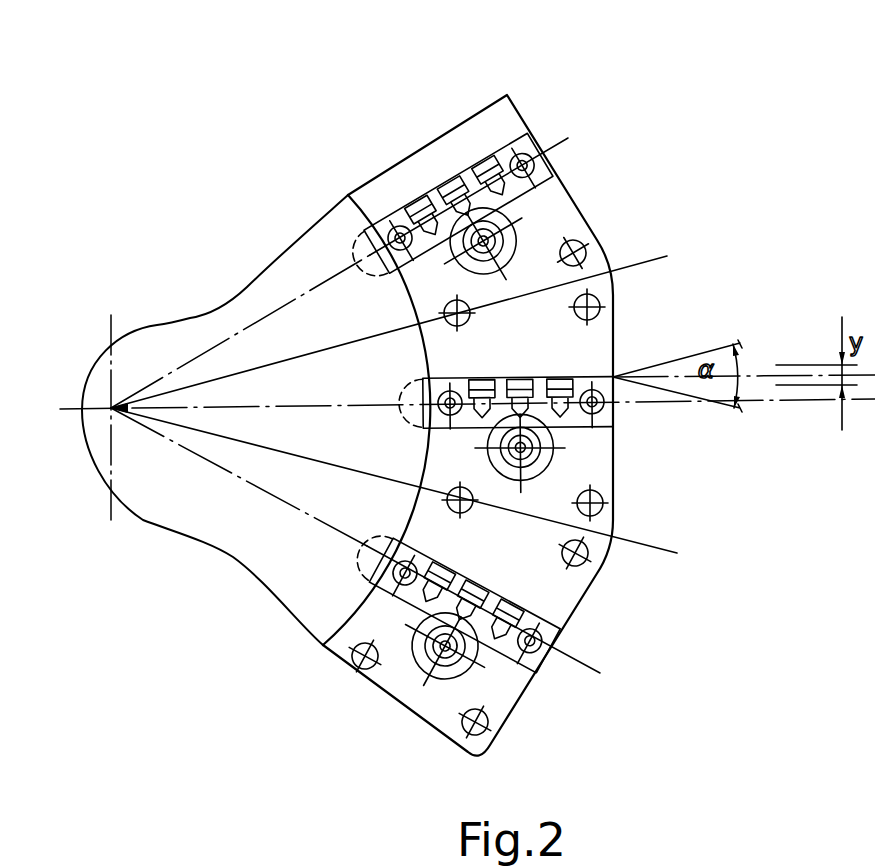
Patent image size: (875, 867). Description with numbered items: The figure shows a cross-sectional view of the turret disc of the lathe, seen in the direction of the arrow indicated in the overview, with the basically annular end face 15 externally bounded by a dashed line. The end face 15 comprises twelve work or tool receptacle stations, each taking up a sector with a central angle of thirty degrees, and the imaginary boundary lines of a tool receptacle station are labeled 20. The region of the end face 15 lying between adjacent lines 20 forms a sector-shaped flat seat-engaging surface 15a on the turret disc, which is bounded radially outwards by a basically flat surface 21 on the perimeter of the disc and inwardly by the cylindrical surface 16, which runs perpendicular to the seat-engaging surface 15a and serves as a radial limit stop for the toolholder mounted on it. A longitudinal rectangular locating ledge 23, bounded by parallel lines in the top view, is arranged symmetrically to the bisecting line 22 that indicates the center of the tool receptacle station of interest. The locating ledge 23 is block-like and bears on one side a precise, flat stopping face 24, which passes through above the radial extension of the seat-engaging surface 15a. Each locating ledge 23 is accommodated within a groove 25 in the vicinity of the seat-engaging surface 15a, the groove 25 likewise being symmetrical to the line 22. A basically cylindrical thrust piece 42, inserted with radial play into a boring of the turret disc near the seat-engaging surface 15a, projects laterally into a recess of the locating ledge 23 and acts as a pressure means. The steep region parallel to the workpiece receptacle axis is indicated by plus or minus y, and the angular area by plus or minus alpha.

The end face 15 is at (604, 264).
The seat-engaging surface 15a is at (560, 284).
The cylindrical surface 16 is at (410, 458).
The boundary line of tool receptacle station 20 is at (660, 258).
The flat surface 21 is at (590, 448).
The bisecting line 22 is at (303, 406).
The locating ledge 23 is at (535, 171).
The stopping face 24 is at (513, 138).
The groove 25 is at (383, 270).
The thrust piece 42 is at (505, 212).